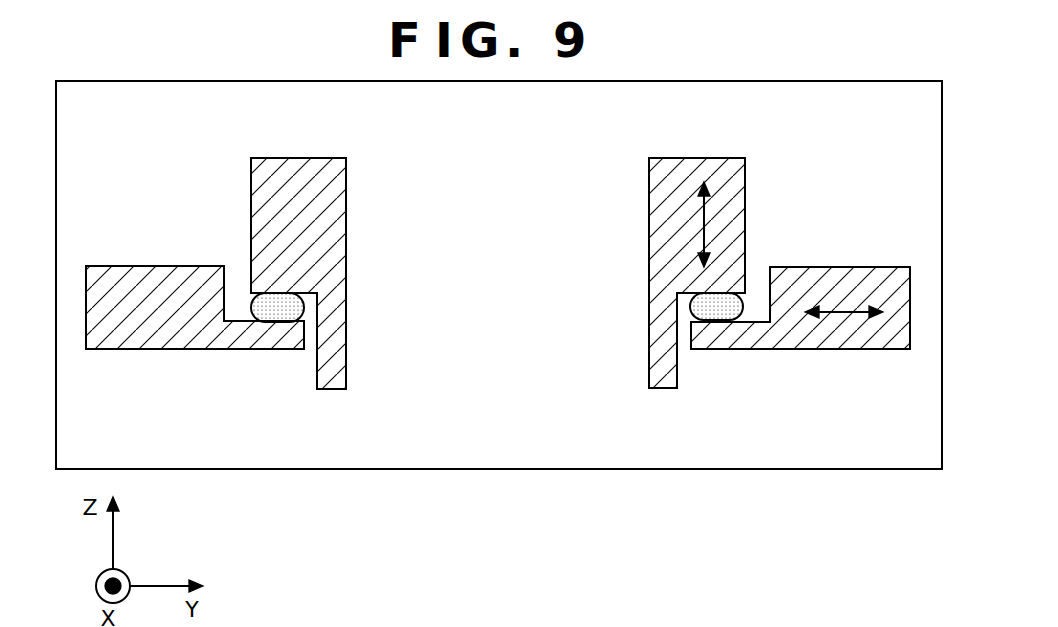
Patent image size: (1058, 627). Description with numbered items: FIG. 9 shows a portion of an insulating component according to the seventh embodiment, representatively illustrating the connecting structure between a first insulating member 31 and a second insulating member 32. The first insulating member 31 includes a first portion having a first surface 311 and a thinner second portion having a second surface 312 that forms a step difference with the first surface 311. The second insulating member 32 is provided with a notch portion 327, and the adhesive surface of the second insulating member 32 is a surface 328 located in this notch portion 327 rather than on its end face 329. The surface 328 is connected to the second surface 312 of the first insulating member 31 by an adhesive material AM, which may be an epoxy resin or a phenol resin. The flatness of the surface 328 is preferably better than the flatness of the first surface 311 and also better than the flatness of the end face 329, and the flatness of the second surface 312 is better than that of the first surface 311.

The first insulating member 31 is at (810, 338).
The first surface 311 is at (882, 265).
The second surface 312 is at (766, 316).
The second insulating member 32 is at (650, 205).
The notch portion 327 is at (700, 380).
The surface 328 is at (688, 290).
The end face 329 is at (660, 392).
The adhesive material AM is at (688, 300).